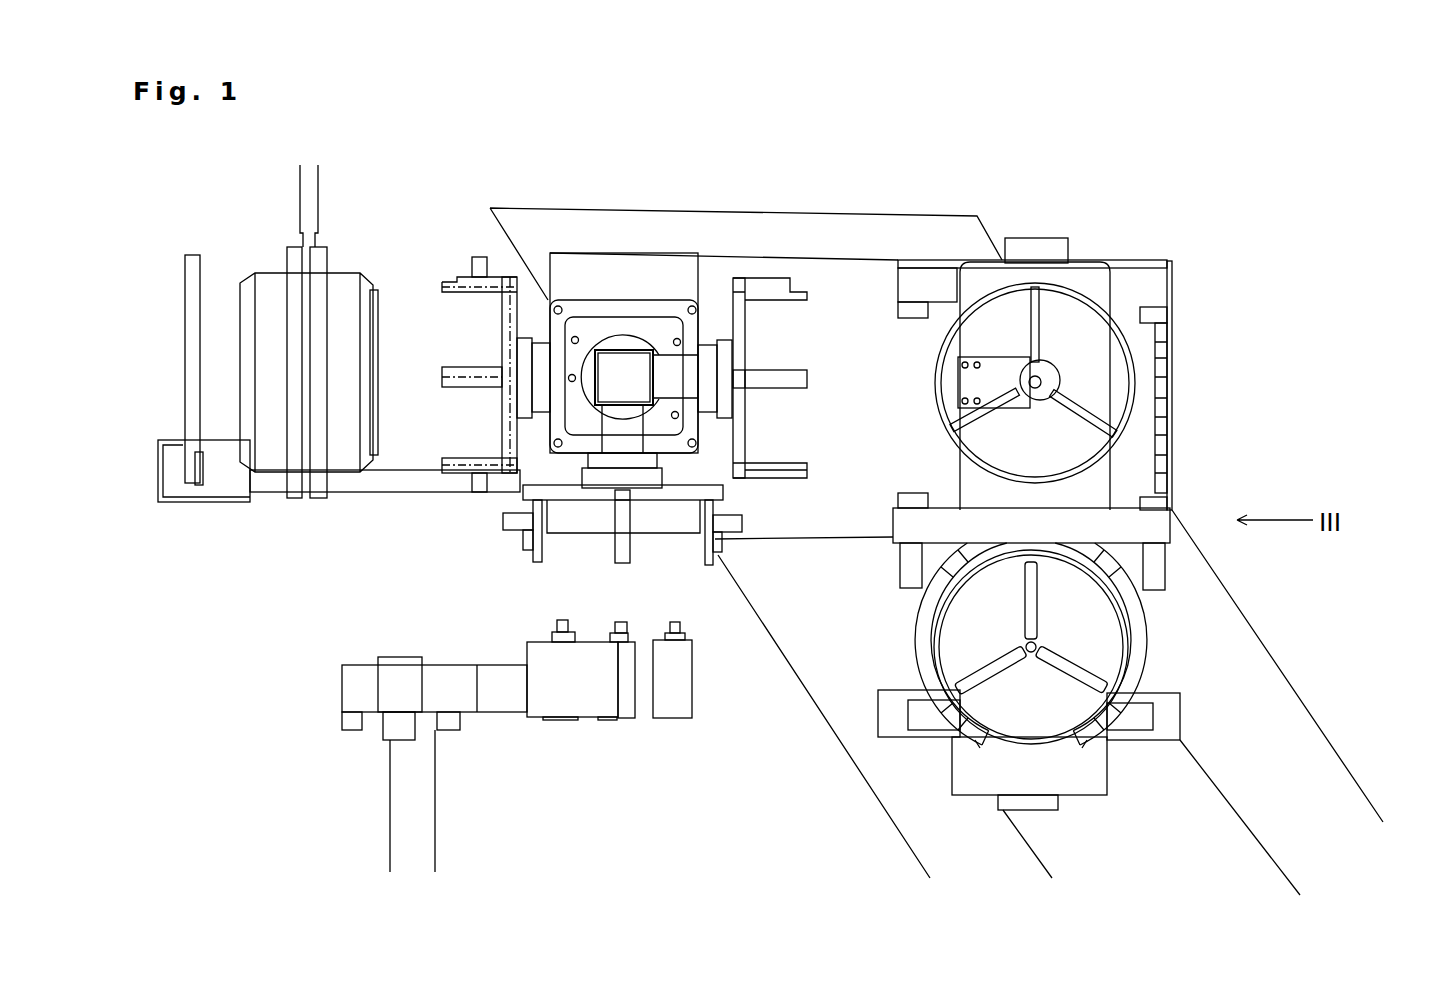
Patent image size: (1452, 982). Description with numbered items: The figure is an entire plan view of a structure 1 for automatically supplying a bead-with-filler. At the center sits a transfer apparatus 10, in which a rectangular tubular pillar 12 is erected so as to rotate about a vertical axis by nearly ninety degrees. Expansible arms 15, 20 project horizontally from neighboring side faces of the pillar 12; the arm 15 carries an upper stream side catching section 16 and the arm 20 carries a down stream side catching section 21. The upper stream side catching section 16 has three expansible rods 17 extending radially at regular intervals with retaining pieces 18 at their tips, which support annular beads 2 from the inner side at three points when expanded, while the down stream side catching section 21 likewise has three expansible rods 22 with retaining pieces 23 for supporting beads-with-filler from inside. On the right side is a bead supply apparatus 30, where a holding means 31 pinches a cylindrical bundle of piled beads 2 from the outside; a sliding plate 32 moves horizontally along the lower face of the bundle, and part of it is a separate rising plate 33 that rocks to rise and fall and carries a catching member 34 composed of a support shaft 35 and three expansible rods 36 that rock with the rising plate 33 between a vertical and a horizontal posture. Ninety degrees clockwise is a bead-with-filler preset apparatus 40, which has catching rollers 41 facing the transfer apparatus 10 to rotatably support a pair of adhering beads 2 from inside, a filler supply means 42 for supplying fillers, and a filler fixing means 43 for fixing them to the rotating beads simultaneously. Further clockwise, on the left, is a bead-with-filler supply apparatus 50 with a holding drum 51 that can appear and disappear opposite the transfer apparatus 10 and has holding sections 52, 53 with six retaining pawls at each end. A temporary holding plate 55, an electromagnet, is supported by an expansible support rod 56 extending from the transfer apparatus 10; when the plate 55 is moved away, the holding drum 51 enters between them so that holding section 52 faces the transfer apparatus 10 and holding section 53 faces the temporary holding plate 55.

The structure for automatic supply of a bead-with-filler 1 is at (757, 156).
The annular bead 2 is at (1080, 293).
The transfer apparatus 10 is at (639, 278).
The rectangular tubular pillar 12 is at (615, 348).
The expansible arm 15 is at (676, 368).
The upper stream side catching section 16 is at (822, 378).
The expansible rod 17 is at (749, 323).
The retaining piece 18 is at (803, 300).
The expansible arm 20 is at (631, 432).
The down stream side catching section 21 is at (622, 556).
The expansible rod 22 is at (576, 500).
The retaining piece 23 is at (725, 596).
The bead supply apparatus 30 is at (1194, 400).
The holding means 31 is at (1148, 642).
The sliding plate 32 is at (1018, 273).
The rising plate 33 is at (1007, 373).
The catching member 34 is at (1120, 383).
The support shaft 35 is at (1057, 373).
The expansible rod 36 is at (1043, 325).
The bead-with-filler preset apparatus 40 is at (546, 751).
The catching roller 41 is at (556, 624).
The filler supply means 42 is at (465, 700).
The filler fixing means 43 is at (583, 698).
The bead-with-filler supply apparatus 50 is at (330, 402).
The holding drum 51 is at (335, 272).
The holding section 52 is at (378, 290).
The holding section 53 is at (240, 290).
The temporary holding plate 55 is at (185, 285).
The expansible support rod 56 is at (417, 492).